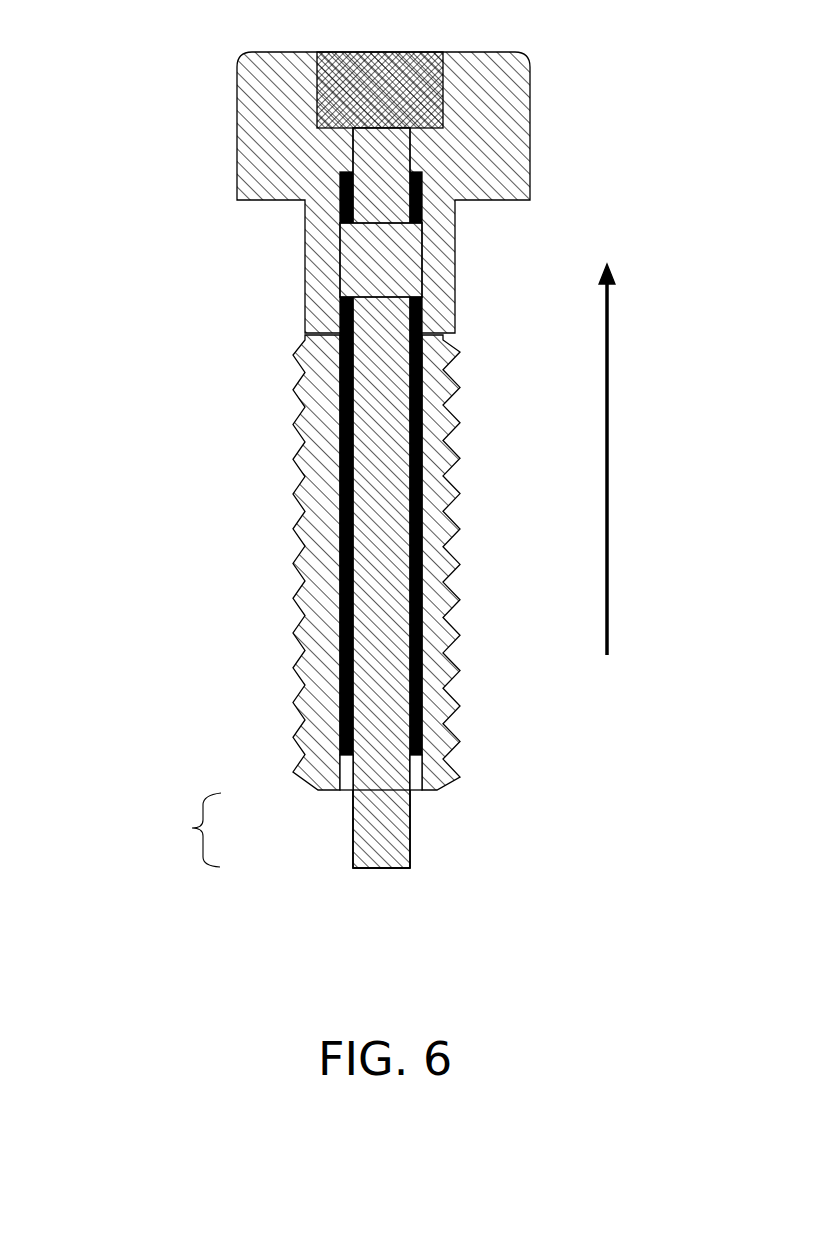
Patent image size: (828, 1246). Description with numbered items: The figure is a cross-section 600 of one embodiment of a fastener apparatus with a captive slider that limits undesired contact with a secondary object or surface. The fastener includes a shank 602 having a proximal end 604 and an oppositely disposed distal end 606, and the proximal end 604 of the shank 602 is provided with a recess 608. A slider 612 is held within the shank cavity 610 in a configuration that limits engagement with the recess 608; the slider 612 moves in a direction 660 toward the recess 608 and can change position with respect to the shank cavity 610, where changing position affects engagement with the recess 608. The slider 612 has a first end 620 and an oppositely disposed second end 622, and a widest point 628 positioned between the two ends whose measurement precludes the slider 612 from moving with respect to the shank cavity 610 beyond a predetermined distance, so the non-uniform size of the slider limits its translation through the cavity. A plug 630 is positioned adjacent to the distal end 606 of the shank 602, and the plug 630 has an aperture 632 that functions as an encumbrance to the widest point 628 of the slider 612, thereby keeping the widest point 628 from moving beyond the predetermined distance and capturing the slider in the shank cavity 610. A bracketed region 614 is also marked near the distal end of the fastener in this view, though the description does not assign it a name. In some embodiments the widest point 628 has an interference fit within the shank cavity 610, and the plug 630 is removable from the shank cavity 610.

The cross-section 600 is at (113, 922).
The shank 602 is at (222, 52).
The proximal end 604 is at (457, 53).
The distal end 606 is at (437, 790).
The recess 608 is at (311, 88).
The shank cavity 610 is at (422, 340).
The slider 612 is at (410, 843).
The protruding tip section 614 is at (192, 828).
The first end 620 is at (382, 128).
The second end 622 is at (380, 868).
The widest point 628 is at (423, 260).
The plug 630 is at (343, 792).
The aperture 632 is at (410, 793).
The direction 660 is at (609, 417).